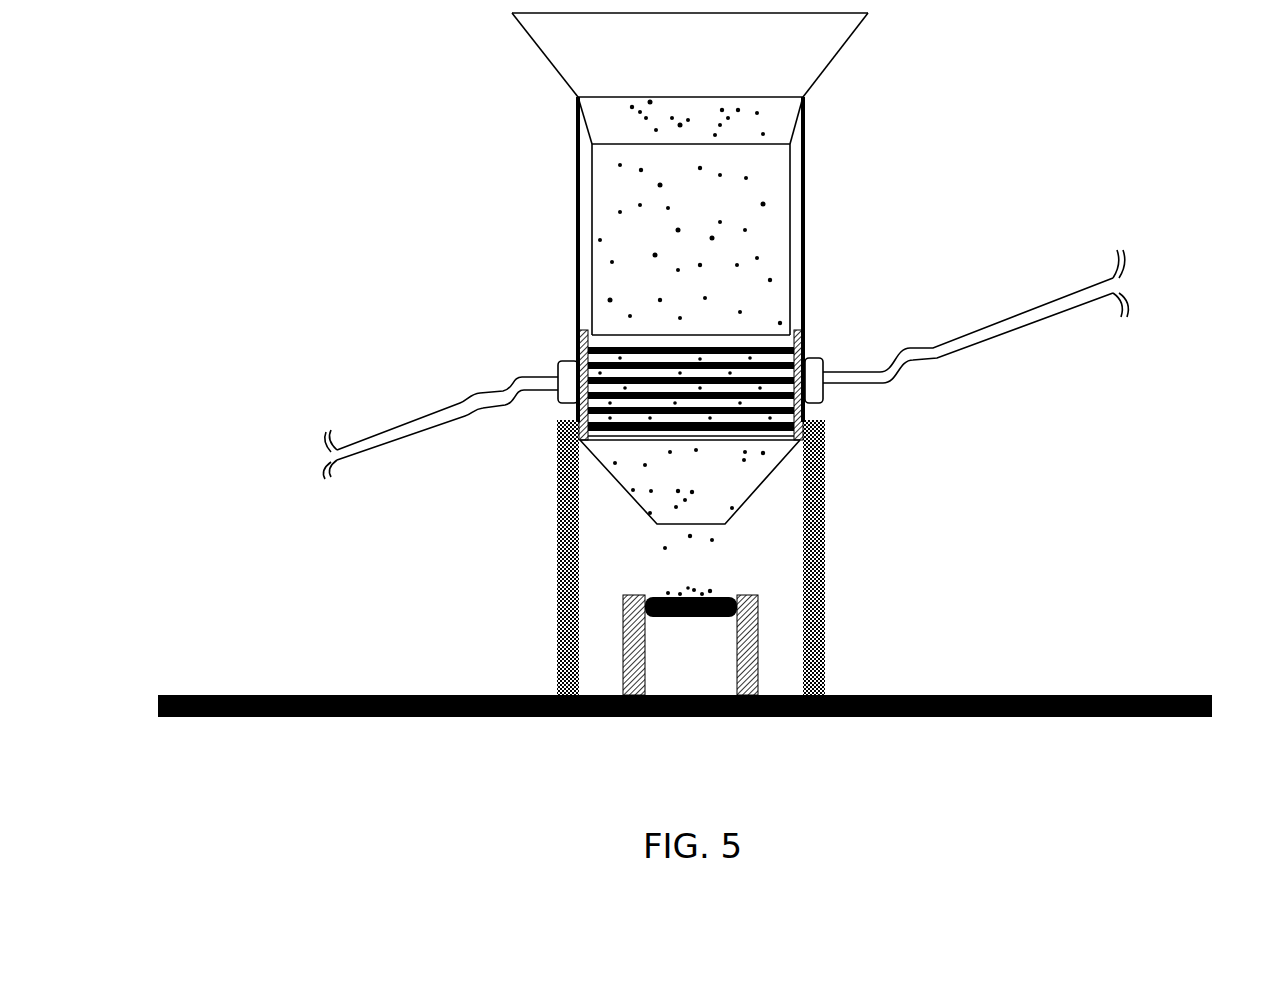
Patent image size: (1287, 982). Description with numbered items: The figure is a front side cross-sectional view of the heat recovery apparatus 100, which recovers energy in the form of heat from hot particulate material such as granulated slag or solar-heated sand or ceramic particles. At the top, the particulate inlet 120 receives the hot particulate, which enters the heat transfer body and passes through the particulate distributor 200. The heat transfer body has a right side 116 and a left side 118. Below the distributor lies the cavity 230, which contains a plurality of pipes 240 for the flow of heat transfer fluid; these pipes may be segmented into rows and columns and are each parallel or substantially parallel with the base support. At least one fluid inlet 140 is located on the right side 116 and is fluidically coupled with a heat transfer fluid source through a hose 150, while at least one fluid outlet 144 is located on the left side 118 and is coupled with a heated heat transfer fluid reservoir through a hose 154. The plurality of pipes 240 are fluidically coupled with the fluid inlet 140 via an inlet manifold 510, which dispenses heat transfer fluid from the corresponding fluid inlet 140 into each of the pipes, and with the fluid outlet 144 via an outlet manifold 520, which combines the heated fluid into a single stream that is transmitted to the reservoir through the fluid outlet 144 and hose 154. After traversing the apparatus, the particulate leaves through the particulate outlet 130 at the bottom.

The heat recovery apparatus 100 is at (1006, 141).
The particulate inlet 120 is at (545, 63).
The right side 116 is at (578, 153).
The left side 118 is at (810, 148).
The particulate distributor 200 is at (798, 197).
The cavity 230 is at (600, 342).
The inlet manifold 510 is at (580, 347).
The outlet manifold 520 is at (805, 340).
The fluid inlet 140 is at (560, 408).
The fluid outlet 144 is at (828, 400).
The hose 150 is at (395, 422).
The hose 154 is at (1033, 330).
The plurality of pipes 240 is at (797, 428).
The particulate outlet 130 is at (755, 505).